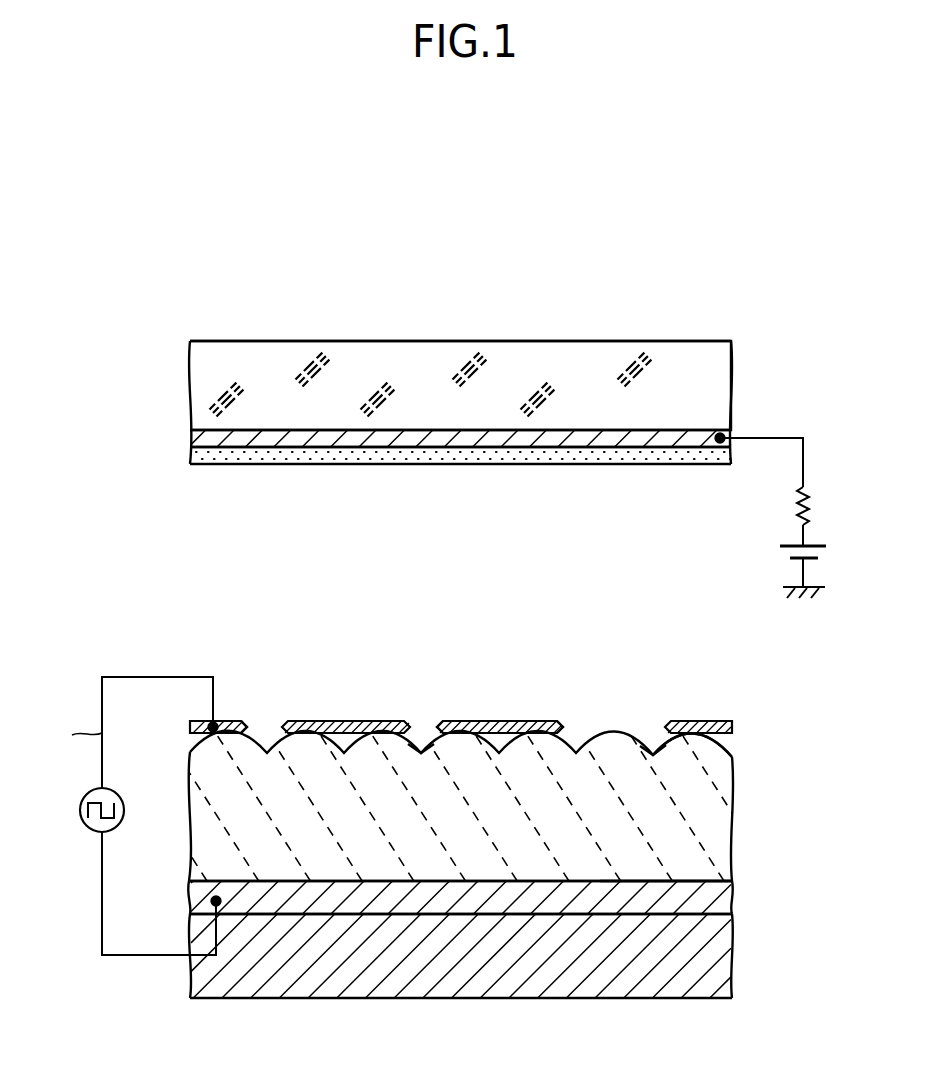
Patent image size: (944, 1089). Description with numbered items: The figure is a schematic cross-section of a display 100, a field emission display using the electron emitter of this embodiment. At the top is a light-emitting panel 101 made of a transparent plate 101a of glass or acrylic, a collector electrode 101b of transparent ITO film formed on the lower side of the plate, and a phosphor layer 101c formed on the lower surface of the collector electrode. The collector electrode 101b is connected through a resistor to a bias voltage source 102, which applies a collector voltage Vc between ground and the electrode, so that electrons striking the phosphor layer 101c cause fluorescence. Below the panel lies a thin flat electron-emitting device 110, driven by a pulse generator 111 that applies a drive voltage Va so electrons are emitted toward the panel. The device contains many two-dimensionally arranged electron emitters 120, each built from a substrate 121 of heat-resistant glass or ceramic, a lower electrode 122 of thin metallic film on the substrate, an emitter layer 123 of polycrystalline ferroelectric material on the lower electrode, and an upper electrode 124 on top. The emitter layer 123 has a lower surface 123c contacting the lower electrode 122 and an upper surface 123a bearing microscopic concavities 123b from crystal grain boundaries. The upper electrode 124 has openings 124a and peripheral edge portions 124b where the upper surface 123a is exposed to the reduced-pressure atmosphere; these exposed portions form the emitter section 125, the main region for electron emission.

The display 100 is at (736, 256).
The light-emitting panel 101 is at (189, 311).
The transparent plate 101a is at (190, 400).
The collector electrode 101b is at (190, 441).
The phosphor layer 101c is at (190, 457).
The bias voltage source 102 is at (782, 547).
The electron-emitting device 110 is at (751, 1008).
The pulse generator 111 is at (80, 810).
The electron emitter 120 is at (298, 659).
The substrate 121 is at (193, 978).
The lower electrode 122 is at (193, 898).
The emitter layer 123 is at (190, 790).
The upper surface 123a is at (735, 740).
The concavities 123b is at (653, 755).
The lower surface 123c is at (704, 884).
The upper electrode 124 is at (322, 727).
The openings 124a is at (268, 714).
The peripheral edge portions 124b is at (582, 719).
The emitter section 125 is at (422, 735).